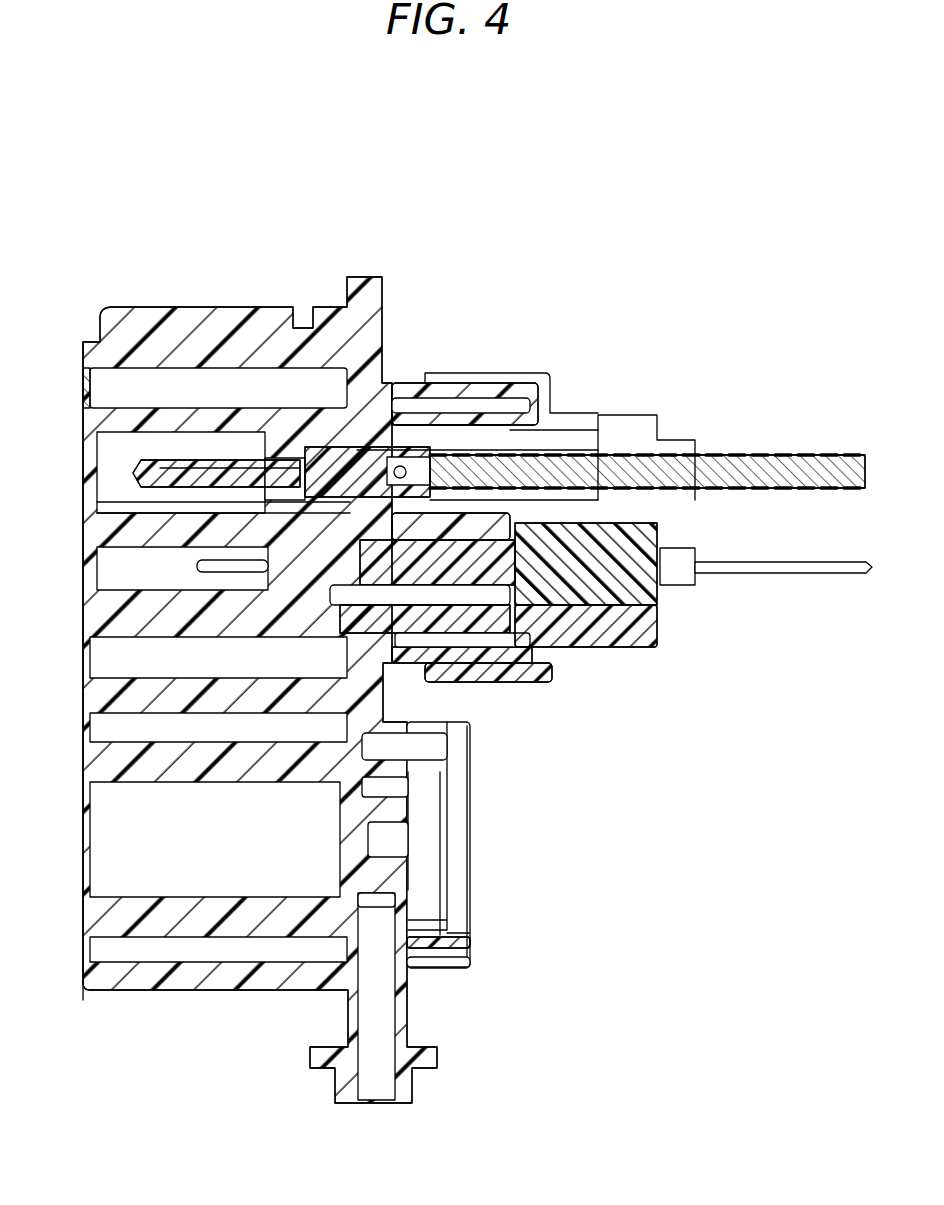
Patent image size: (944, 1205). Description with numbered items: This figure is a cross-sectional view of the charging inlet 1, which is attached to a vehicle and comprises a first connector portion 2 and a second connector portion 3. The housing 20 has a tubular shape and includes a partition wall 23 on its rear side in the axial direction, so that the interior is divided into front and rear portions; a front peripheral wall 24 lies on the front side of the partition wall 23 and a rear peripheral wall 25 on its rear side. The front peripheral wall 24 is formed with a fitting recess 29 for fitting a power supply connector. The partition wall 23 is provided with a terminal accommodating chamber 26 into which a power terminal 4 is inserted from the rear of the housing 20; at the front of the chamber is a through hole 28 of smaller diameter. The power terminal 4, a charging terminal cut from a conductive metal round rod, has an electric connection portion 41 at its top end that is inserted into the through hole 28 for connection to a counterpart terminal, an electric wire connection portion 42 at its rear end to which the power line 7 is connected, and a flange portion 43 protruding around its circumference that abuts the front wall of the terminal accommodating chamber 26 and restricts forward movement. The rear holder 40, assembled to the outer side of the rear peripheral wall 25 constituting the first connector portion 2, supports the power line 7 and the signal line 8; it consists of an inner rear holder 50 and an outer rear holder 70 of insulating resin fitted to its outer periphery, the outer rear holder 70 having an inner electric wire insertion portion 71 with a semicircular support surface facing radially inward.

The charging inlet 1 is at (612, 238).
The first connector portion 2 is at (70, 553).
The second connector portion 3 is at (73, 1000).
The power terminal 4 is at (205, 448).
The power line 7 is at (777, 460).
The signal line 8 is at (778, 575).
The housing 20 is at (150, 296).
The partition wall 23 is at (370, 683).
The front peripheral wall 24 is at (257, 305).
The rear peripheral wall 25 is at (502, 385).
The terminal accommodating chamber 26 is at (396, 445).
The through hole 28 is at (95, 507).
The fitting recess 29 is at (105, 388).
The rear holder 40 is at (593, 684).
The electric connection portion 41 is at (165, 467).
The electric wire connection portion 42 is at (428, 455).
The flange portion 43 is at (363, 395).
The inner rear holder 50 is at (588, 592).
The outer rear holder 70 is at (627, 662).
The inner electric wire insertion portion 71 is at (627, 427).